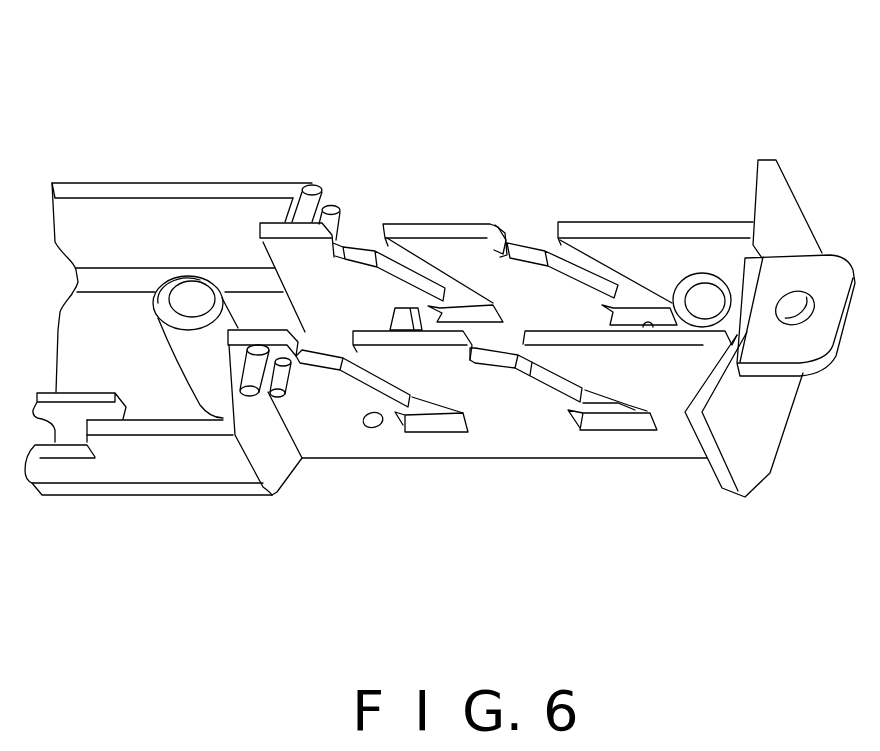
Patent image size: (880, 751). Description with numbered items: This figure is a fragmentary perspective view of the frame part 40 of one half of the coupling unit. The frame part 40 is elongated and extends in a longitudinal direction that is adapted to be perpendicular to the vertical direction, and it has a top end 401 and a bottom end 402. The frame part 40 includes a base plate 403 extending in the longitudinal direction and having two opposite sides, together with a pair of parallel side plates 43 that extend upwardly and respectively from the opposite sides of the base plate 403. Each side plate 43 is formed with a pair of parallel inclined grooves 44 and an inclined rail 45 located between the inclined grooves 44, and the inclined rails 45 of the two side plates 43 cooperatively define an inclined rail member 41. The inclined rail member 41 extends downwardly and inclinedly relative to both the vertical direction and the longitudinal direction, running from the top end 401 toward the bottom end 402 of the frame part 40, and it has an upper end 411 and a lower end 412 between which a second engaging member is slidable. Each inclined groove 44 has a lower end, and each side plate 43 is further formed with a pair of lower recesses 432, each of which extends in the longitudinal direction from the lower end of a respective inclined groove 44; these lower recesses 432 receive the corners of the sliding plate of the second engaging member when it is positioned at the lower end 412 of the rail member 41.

The frame part 40 is at (227, 497).
The top end 401 is at (692, 230).
The bottom end 402 is at (665, 460).
The base plate 403 is at (102, 323).
The inclined rail member 41 is at (365, 336).
The upper end 411 is at (448, 335).
The lower end 412 is at (513, 442).
The side plate 43 is at (218, 190).
The inclined groove 44 is at (570, 272).
The inclined rail 45 is at (487, 227).
The lower recess 432 is at (397, 412).